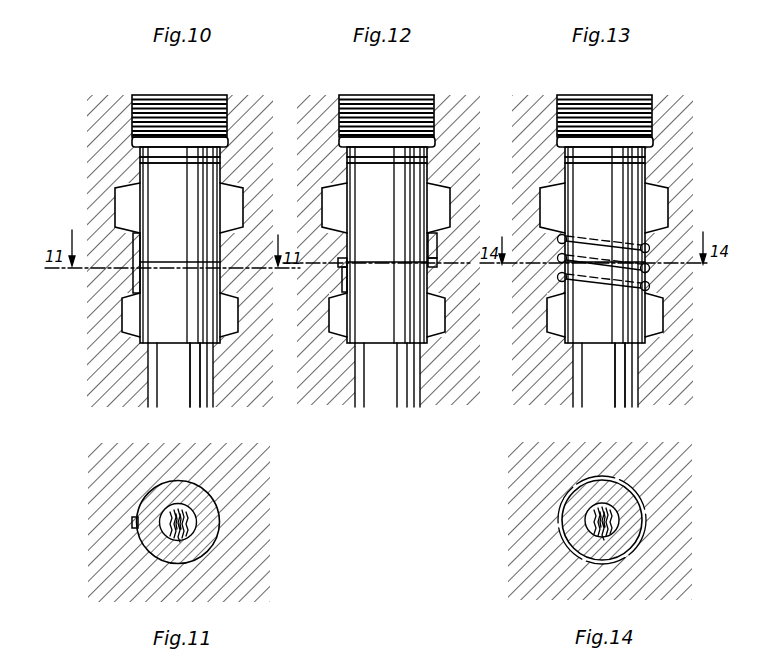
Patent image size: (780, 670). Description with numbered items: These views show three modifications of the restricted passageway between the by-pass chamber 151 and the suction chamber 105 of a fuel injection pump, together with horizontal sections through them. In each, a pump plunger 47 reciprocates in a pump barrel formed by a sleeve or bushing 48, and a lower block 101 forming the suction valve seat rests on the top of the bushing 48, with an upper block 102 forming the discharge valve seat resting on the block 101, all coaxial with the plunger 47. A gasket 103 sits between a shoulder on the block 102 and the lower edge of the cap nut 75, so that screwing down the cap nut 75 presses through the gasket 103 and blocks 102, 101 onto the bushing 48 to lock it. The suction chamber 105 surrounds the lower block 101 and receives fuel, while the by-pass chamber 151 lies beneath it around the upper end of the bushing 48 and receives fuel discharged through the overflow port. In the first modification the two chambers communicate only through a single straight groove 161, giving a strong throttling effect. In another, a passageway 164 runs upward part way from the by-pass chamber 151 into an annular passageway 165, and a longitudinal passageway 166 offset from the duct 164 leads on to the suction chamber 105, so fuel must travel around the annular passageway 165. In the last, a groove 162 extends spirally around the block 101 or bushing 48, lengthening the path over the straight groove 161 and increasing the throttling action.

In FIG. 10, the cap nut 75 is at (166, 104).
In FIG. 12, the cap nut 75 is at (381, 105).
In FIG. 13, the cap nut 75 is at (588, 105).
In FIG. 10, the lower block 101 is at (155, 212).
In FIG. 12, the lower block 101 is at (413, 207).
In FIG. 13, the lower block 101 is at (577, 194).
In FIG. 10, the upper block 102 is at (153, 169).
In FIG. 12, the upper block 102 is at (428, 167).
In FIG. 13, the upper block 102 is at (572, 166).
In FIG. 10, the gasket 103 is at (222, 156).
In FIG. 12, the gasket 103 is at (352, 155).
In FIG. 13, the gasket 103 is at (645, 155).
In FIG. 10, the suction chamber 105 is at (236, 198).
In FIG. 12, the suction chamber 105 is at (337, 198).
In FIG. 13, the suction chamber 105 is at (652, 197).
In FIG. 10, the by-pass chamber 151 is at (128, 318).
In FIG. 12, the by-pass chamber 151 is at (450, 319).
In FIG. 13, the by-pass chamber 151 is at (553, 318).
In FIG. 10, the groove 161 is at (133, 283).
In FIG. 11, the groove 161 is at (132, 522).
In FIG. 13, the spiral groove 162 is at (649, 268).
In FIG. 14, the spiral groove 162 is at (626, 476).
In FIG. 12, the passageway 164 is at (345, 280).
In FIG. 12, the annular passageway 165 is at (438, 263).
In FIG. 12, the longitudinal passageway 166 is at (441, 242).
In FIG. 13, the longitudinal passageway 166 is at (556, 236).
In FIG. 10, the pump plunger 47 is at (229, 400).
In FIG. 11, the pump plunger 47 is at (191, 516).
In FIG. 13, the pump plunger 47 is at (610, 405).
In FIG. 14, the pump plunger 47 is at (601, 510).
In FIG. 10, the sleeve or bushing 48 is at (160, 396).
In FIG. 11, the sleeve or bushing 48 is at (163, 490).
In FIG. 12, the sleeve or bushing 48 is at (392, 398).
In FIG. 13, the sleeve or bushing 48 is at (580, 392).
In FIG. 14, the sleeve or bushing 48 is at (576, 494).